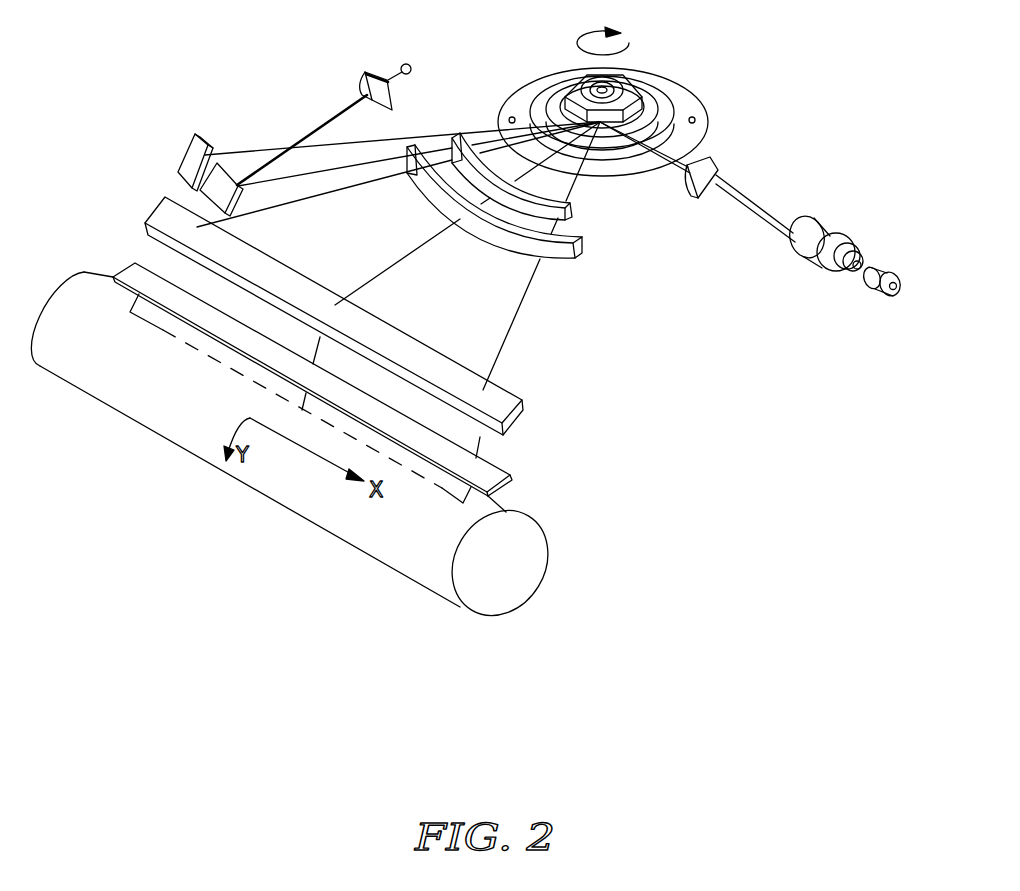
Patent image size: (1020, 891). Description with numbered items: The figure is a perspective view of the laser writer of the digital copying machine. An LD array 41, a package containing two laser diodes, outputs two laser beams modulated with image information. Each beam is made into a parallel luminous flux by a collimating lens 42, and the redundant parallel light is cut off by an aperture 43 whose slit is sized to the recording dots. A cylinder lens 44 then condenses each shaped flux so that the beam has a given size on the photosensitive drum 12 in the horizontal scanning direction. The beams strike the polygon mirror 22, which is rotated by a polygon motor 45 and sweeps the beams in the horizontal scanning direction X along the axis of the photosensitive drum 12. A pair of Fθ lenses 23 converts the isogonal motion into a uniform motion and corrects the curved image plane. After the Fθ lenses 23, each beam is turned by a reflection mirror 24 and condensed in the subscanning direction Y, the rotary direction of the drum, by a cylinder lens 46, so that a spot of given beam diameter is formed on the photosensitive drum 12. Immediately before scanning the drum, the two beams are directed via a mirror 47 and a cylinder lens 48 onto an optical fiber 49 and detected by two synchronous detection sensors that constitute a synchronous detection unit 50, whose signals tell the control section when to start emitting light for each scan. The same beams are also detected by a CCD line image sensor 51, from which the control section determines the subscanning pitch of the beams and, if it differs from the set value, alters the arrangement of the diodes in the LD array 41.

The photosensitive drum 12 is at (545, 548).
The polygon mirror 22 is at (633, 100).
The Fθ lenses 23 is at (423, 145).
The reflection mirror 24 is at (354, 300).
The LD array 41 is at (875, 290).
The collimating lens 42 is at (837, 233).
The aperture 43 is at (813, 213).
The cylinder lens 44 is at (700, 196).
The polygon motor 45 is at (664, 98).
The cylinder lens 46 is at (508, 482).
The mirror 47 is at (197, 227).
The cylinder lens 48 is at (362, 90).
The optical fiber 49 is at (380, 68).
The synchronous detection unit 50 is at (406, 63).
The CCD line image sensor 51 is at (192, 143).